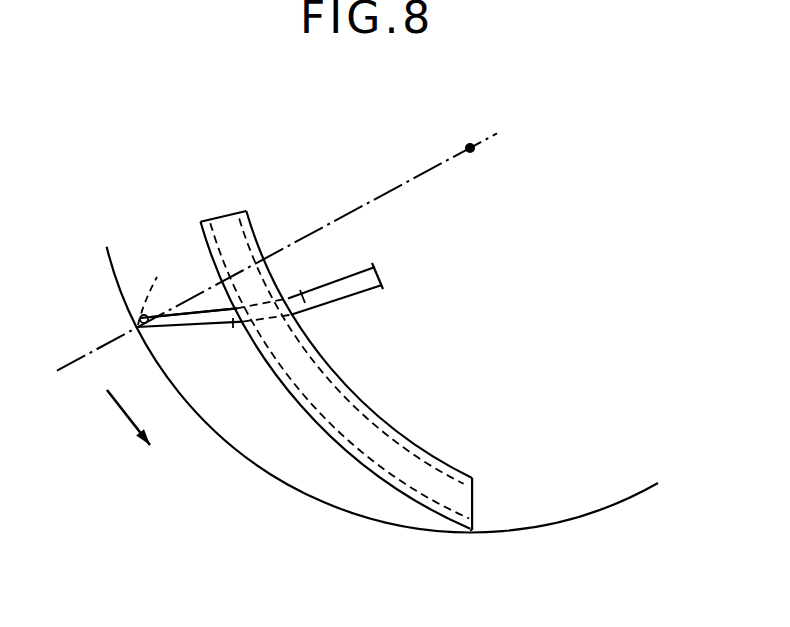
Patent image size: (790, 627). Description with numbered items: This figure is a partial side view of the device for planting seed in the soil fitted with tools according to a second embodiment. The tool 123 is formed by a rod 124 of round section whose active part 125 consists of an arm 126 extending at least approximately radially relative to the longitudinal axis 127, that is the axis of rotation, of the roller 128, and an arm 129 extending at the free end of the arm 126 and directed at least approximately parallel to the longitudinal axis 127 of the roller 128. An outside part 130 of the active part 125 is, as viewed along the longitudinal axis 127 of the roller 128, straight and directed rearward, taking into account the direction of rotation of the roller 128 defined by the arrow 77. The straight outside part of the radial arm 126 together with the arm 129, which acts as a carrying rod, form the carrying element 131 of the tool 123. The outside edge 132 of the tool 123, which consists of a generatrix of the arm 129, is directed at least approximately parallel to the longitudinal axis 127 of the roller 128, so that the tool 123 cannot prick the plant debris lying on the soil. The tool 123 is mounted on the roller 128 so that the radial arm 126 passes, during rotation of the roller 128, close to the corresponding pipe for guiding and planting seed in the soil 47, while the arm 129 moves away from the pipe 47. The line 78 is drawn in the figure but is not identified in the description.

The pipe for guiding and planting seed in the soil 47 is at (243, 236).
The arrow 77 is at (112, 402).
The axis line 78 is at (380, 194).
The tool 123 is at (380, 272).
The rod 124 is at (333, 301).
The active part 125 is at (303, 296).
The arm 126 is at (233, 324).
The longitudinal axis 127 is at (474, 141).
The roller 128 is at (116, 279).
The arm 129 is at (157, 288).
The outside part 130 is at (180, 325).
The carrying element 131 is at (203, 306).
The outside edge 132 is at (136, 327).